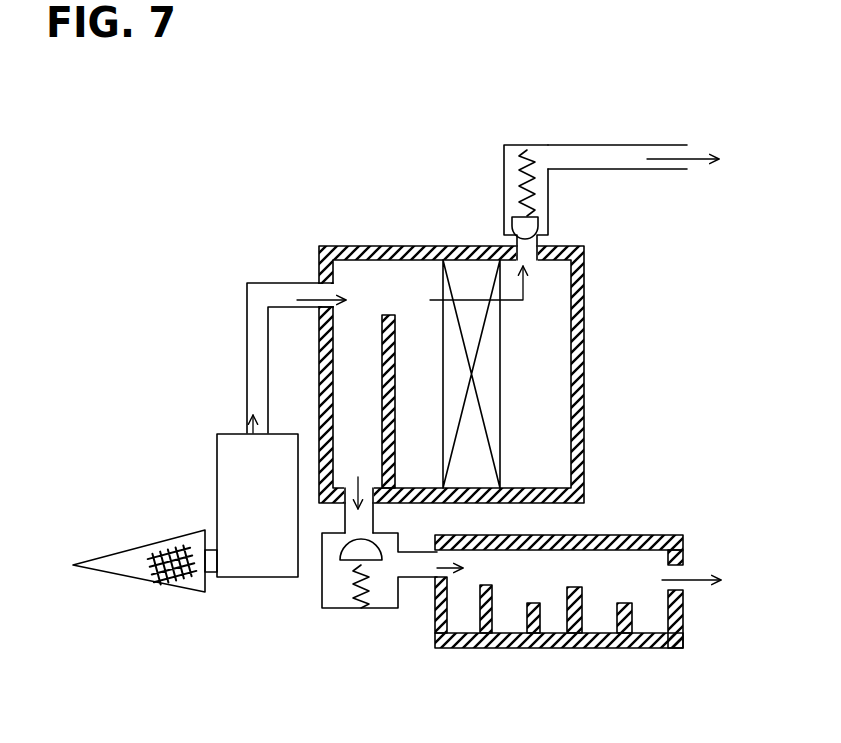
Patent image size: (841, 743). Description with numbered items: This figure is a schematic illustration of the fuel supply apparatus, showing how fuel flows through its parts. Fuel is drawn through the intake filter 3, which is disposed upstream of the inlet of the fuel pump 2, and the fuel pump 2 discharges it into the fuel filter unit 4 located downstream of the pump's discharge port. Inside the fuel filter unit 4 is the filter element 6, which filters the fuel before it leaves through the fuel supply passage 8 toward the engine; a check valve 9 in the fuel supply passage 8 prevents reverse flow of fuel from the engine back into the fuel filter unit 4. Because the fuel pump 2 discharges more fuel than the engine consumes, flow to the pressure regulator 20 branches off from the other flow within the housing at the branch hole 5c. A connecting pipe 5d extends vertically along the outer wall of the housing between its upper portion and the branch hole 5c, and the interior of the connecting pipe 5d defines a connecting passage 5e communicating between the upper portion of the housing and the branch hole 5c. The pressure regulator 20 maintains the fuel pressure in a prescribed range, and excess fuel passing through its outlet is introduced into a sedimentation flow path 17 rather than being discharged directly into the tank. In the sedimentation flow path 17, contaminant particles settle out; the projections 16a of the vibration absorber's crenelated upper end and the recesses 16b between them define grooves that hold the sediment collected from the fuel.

The fuel pump 2 is at (227, 473).
The intake filter 3 is at (122, 562).
The fuel filter unit 4 is at (590, 365).
The branch hole 5c is at (362, 477).
The connecting pipe 5d is at (398, 317).
The connecting passage 5e is at (363, 333).
The filter element 6 is at (490, 335).
The fuel supply passage 8 is at (585, 157).
The check valve 9 is at (520, 205).
The sedimentation flow path 17 is at (608, 578).
The projections 16a is at (527, 600).
The recesses 16b is at (642, 625).
The pressure regulator 20 is at (350, 603).